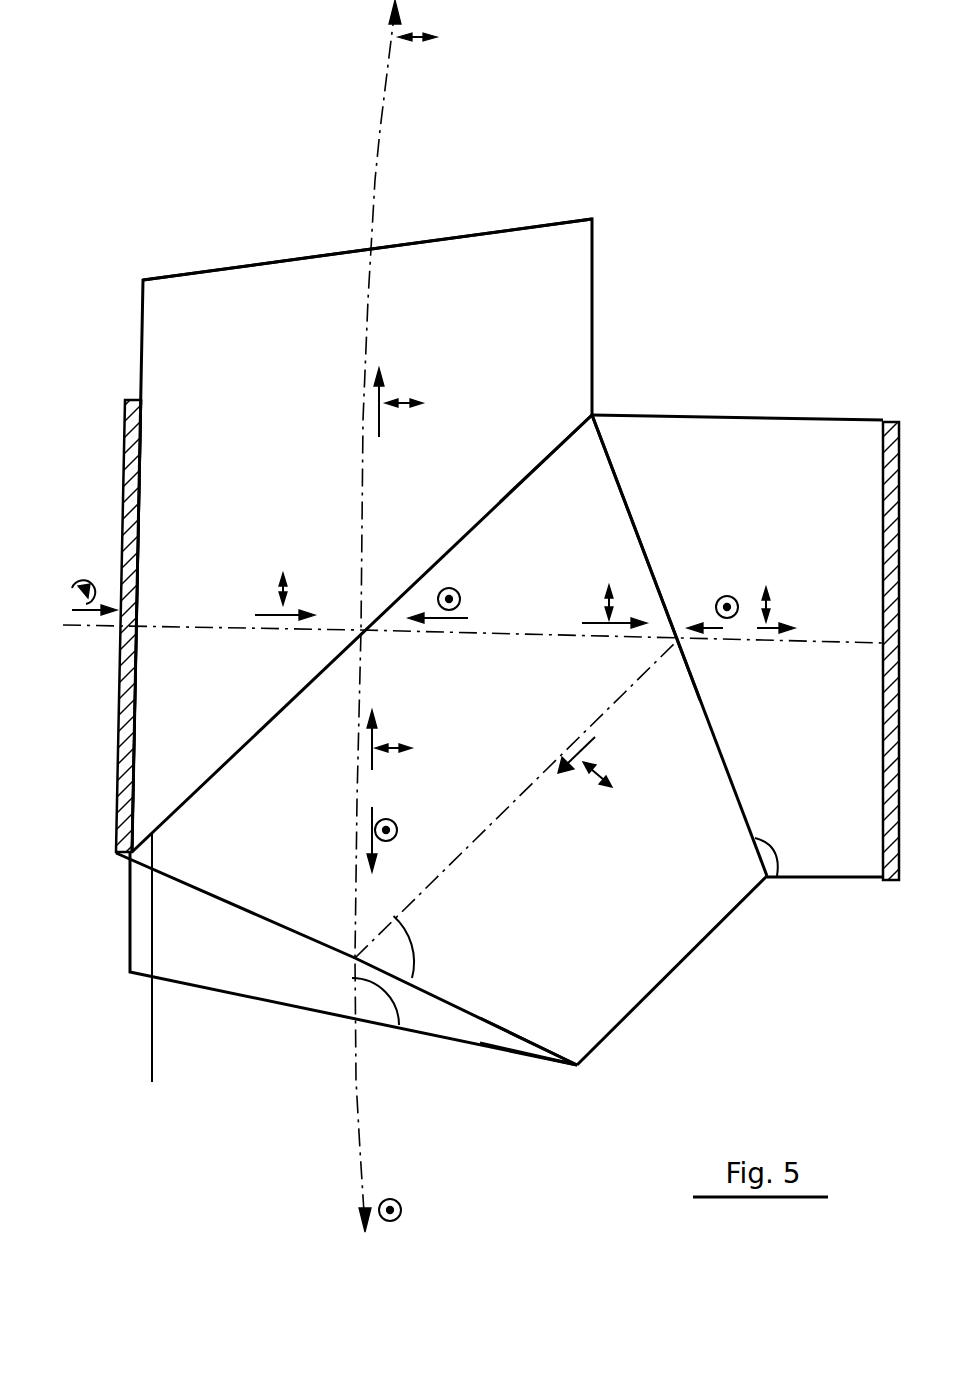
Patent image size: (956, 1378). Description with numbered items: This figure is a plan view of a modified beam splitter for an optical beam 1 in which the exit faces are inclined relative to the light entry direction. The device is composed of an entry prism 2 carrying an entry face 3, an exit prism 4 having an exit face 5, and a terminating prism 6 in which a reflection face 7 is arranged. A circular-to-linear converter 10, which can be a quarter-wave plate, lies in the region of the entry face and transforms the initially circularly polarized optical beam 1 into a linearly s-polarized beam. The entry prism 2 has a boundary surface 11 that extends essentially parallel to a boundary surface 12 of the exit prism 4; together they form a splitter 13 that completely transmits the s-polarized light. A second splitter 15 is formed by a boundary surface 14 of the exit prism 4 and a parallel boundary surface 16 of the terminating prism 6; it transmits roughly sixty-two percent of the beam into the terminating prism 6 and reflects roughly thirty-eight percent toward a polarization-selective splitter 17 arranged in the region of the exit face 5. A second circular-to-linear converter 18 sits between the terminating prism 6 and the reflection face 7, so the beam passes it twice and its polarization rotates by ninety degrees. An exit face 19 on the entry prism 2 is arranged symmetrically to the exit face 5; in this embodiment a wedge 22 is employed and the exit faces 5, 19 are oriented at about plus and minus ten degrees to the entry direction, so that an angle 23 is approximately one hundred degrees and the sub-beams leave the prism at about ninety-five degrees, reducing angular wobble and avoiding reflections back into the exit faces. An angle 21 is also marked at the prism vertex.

The optical beam 1 is at (85, 627).
The entry prism 2 is at (257, 292).
The entry face 3 is at (123, 490).
The exit prism 4 is at (653, 967).
The exit face 5 is at (254, 998).
The terminating prism 6 is at (840, 860).
The reflection face 7 is at (898, 422).
The circular-to-linear converter 10 is at (125, 415).
The boundary surface 11 is at (538, 458).
The boundary surface 12 is at (505, 492).
The splitter 13 is at (150, 980).
The boundary surface 14 is at (727, 777).
The second splitter 15 is at (777, 877).
The boundary surface 16 is at (710, 712).
The splitter 17 is at (517, 1035).
The second circular-to-linear converter 18 is at (878, 423).
The exit face 19 is at (477, 232).
The angle 21 is at (385, 955).
The wedge 22 is at (307, 990).
The angle 23 is at (363, 1002).